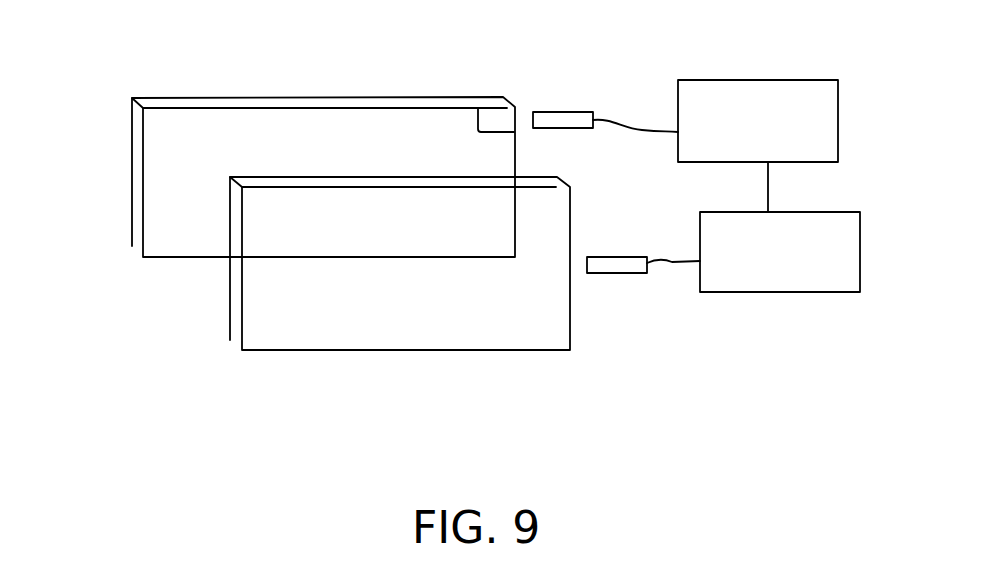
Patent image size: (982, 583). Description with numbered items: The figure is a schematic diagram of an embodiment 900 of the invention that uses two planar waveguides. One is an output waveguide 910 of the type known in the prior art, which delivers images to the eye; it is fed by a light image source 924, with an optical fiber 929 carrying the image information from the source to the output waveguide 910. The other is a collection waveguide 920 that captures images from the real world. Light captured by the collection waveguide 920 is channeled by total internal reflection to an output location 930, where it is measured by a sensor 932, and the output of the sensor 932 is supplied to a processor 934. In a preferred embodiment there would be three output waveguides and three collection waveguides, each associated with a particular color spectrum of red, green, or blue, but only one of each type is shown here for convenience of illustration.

The embodiment 900 is at (152, 372).
The output waveguide 910 is at (250, 322).
The collection waveguide 920 is at (158, 188).
The light image source 924 is at (860, 256).
The optical fiber 929 is at (665, 262).
The output location 930 is at (497, 115).
The sensor 932 is at (563, 108).
The processor 934 is at (845, 131).